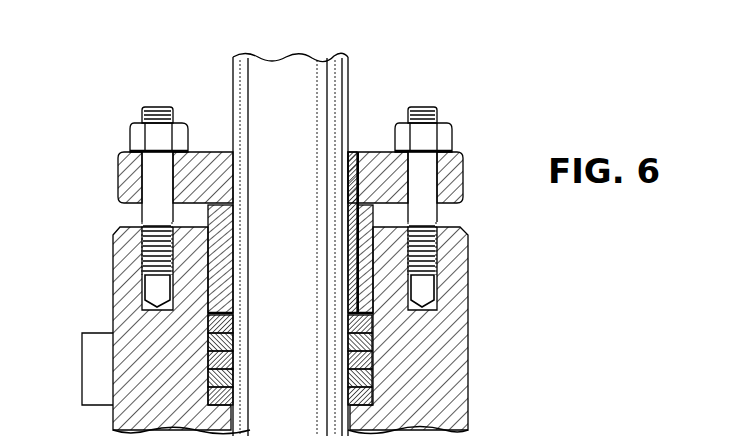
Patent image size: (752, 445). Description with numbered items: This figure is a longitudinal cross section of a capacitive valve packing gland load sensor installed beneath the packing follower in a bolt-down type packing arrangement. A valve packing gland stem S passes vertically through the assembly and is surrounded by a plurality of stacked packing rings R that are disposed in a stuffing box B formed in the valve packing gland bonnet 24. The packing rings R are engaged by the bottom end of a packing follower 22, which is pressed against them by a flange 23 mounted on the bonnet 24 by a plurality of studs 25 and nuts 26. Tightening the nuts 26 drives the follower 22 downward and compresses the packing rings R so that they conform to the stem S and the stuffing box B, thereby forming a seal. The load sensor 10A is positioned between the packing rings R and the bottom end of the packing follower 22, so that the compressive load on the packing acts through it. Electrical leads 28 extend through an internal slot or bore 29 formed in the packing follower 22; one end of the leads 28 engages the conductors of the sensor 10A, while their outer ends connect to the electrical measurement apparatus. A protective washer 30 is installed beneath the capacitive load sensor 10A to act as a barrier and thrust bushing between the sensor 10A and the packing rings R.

The valve packing gland stem S is at (234, 88).
The electrical leads 28 is at (401, 57).
The studs 25 is at (155, 107).
The nuts 26 is at (129, 137).
The flange 23 is at (118, 183).
The packing follower 22 is at (215, 305).
The internal slot or bore 29 is at (373, 241).
The valve packing gland bonnet 24 is at (333, 330).
The load sensor 10A is at (470, 320).
The protective washer 30 is at (352, 331).
The stuffing box B is at (370, 365).
The packing rings R is at (82, 370).